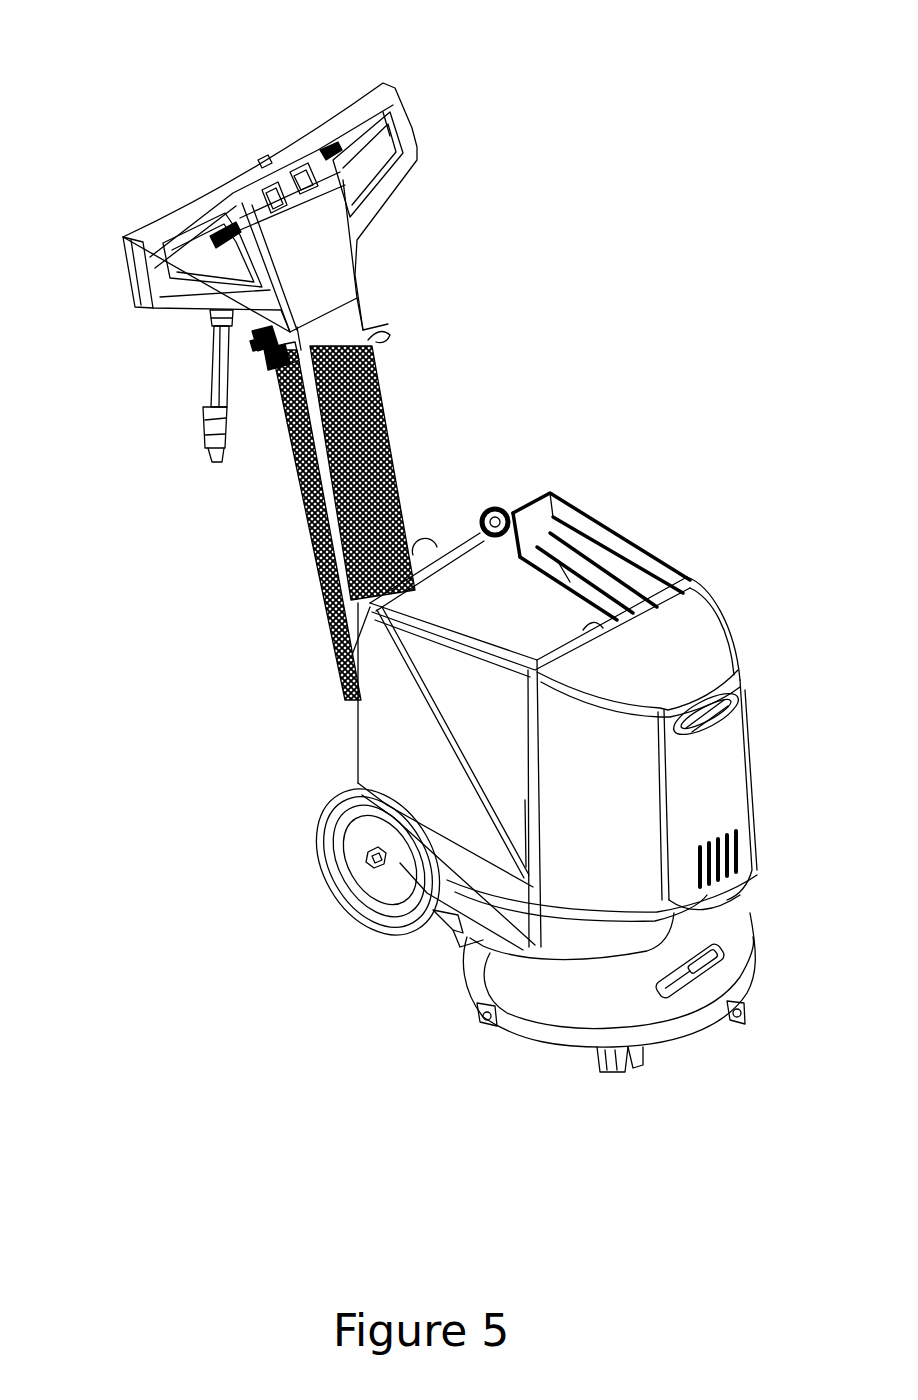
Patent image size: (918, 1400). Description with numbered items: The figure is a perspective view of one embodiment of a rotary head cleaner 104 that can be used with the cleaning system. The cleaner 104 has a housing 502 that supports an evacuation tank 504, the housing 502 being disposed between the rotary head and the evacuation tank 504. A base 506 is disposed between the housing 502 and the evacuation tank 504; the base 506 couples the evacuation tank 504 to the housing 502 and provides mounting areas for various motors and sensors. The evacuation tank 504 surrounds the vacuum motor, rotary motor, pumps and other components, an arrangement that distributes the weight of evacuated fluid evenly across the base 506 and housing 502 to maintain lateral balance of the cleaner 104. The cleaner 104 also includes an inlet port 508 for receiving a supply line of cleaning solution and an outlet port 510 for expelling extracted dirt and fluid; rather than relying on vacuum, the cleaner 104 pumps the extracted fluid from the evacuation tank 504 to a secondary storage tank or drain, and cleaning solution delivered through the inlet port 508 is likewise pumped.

The rotary head cleaner 104 is at (148, 93).
The housing 502 is at (540, 1020).
The evacuation tank 504 is at (383, 723).
The base 506 is at (695, 923).
The inlet port 508 is at (263, 363).
The outlet port 510 is at (250, 346).